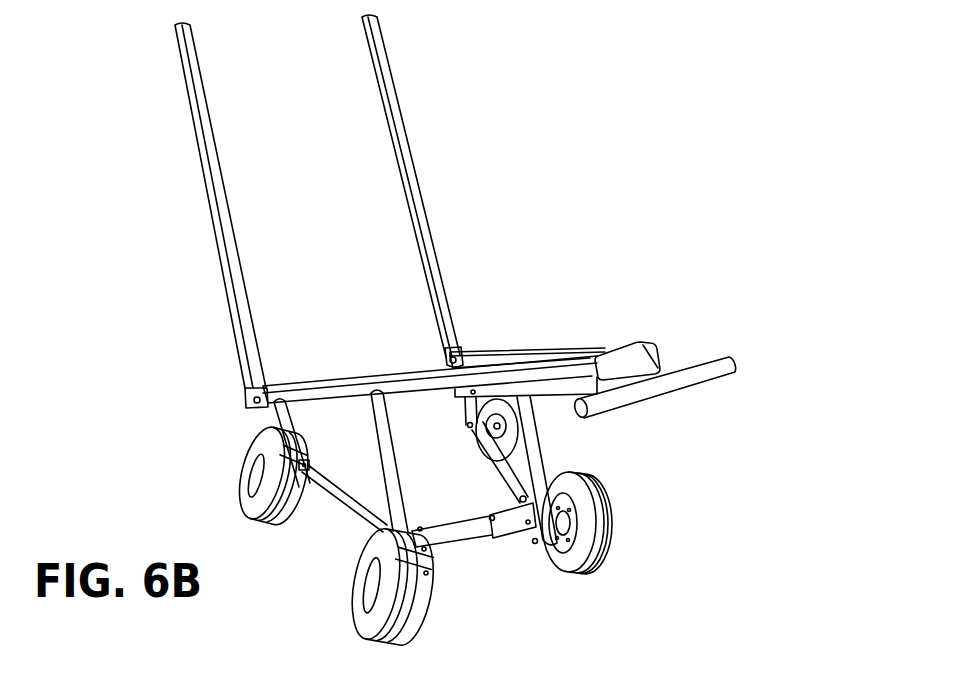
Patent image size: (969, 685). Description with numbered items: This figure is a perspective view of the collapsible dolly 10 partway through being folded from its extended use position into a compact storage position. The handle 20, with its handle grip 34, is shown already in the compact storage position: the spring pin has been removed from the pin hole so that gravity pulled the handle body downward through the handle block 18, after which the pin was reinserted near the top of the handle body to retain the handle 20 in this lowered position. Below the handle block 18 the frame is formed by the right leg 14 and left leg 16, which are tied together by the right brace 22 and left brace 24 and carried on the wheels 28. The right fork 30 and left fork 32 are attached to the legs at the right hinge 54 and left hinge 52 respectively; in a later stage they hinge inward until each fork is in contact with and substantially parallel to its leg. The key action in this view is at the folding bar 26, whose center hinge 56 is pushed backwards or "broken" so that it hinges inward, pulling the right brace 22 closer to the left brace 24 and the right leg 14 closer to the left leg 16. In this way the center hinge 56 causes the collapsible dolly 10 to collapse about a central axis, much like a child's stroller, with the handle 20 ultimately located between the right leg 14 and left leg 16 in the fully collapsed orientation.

The collapsible dolly 10 is at (578, 91).
The right leg 14 is at (528, 352).
The left leg 16 is at (407, 378).
The handle block 18 is at (651, 360).
The handle 20 is at (556, 428).
The right brace 22 is at (483, 457).
The left brace 24 is at (348, 497).
The folding bar 26 is at (442, 527).
The wheels 28 is at (358, 548).
The right fork 30 is at (410, 188).
The left fork 32 is at (227, 218).
The handle grip 34 is at (663, 394).
The left hinge 52 is at (245, 389).
The right hinge 54 is at (456, 356).
The center hinge 56 is at (482, 540).